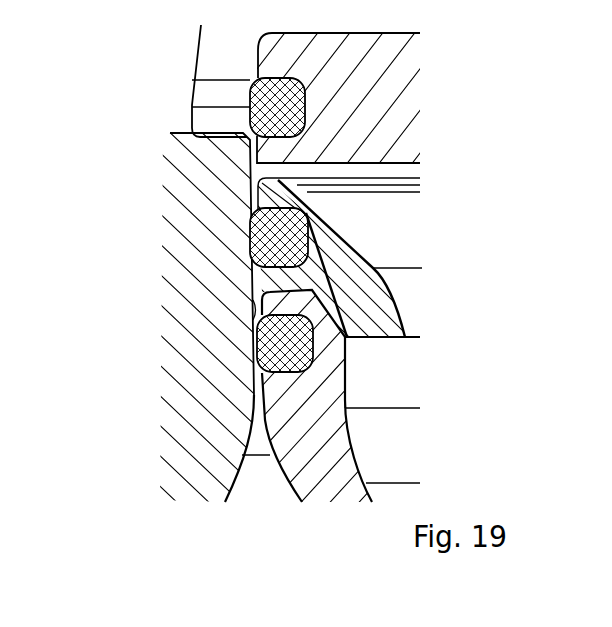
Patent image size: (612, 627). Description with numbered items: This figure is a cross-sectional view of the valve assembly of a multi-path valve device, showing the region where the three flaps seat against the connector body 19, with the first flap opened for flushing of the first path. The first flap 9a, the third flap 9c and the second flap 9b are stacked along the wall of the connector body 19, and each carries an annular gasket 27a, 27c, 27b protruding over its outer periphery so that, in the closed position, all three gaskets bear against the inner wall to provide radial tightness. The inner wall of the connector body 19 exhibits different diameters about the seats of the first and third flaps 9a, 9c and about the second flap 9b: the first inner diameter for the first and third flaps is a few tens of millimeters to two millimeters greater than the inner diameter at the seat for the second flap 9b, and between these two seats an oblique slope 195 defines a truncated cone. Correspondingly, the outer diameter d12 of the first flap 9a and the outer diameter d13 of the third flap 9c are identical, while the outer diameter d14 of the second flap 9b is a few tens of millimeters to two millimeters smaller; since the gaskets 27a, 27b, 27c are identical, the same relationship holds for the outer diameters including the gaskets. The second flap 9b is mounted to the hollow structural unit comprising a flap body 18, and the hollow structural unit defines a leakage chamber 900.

The first flap 9a is at (417, 33).
The outer diameter of the first flap d12 is at (258, 68).
The gasket 27a is at (198, 107).
The gasket 27c is at (250, 222).
The third flap 9c is at (400, 222).
The connector body 19 is at (190, 263).
The outer diameter of the third flap d13 is at (260, 280).
The oblique slope 195 is at (253, 334).
The second flap 9b is at (350, 367).
The outer diameter of the second flap d14 is at (263, 396).
The gasket 27b is at (258, 378).
The leakage chamber 900 is at (400, 452).
The flap body 18 is at (328, 478).